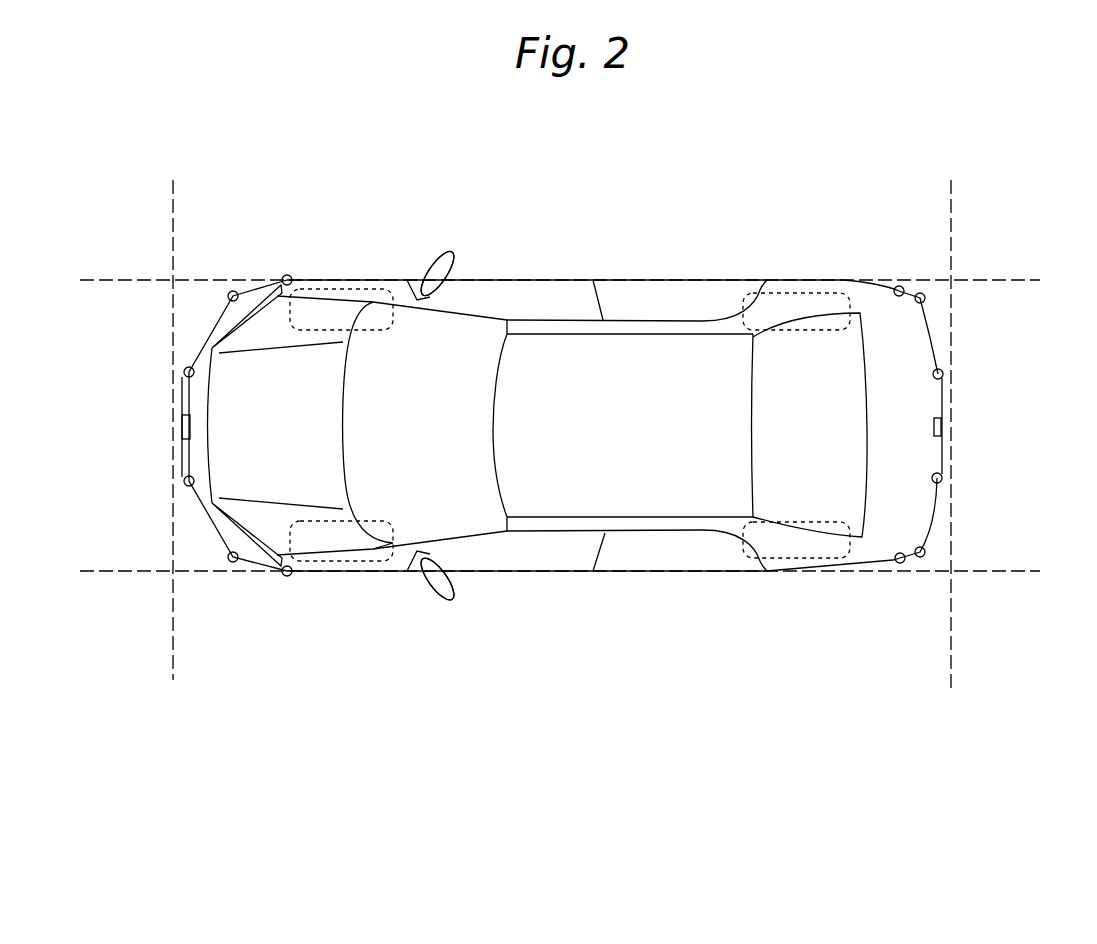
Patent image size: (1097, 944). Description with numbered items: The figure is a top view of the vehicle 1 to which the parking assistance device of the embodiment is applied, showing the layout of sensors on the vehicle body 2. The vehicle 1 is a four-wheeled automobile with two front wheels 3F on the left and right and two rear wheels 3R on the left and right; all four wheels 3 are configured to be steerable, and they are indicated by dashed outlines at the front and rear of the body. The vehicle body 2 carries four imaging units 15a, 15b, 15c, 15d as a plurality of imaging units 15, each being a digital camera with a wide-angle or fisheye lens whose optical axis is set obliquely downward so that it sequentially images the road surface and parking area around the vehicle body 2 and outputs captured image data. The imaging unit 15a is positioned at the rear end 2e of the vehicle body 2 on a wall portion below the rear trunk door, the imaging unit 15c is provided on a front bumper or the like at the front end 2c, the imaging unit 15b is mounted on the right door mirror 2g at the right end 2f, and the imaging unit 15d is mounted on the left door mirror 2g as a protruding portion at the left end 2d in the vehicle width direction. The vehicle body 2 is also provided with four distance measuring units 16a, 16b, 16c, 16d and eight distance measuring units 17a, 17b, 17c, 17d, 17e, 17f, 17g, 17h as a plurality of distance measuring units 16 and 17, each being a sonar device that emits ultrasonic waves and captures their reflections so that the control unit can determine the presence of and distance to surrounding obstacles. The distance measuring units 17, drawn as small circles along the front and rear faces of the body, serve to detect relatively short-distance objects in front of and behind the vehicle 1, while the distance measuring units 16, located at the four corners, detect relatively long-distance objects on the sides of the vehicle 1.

The vehicle 1 is at (694, 183).
The vehicle body 2 is at (878, 279).
The front end 2c is at (181, 444).
The left end 2d is at (677, 572).
The rear end 2e is at (943, 452).
The right end 2f is at (688, 279).
The door mirror 2g is at (455, 257).
The wheels 3 is at (570, 427).
The front wheels 3F is at (333, 289).
The rear wheels 3R is at (790, 292).
The imaging units 15 is at (572, 447).
The imaging unit 15a is at (943, 424).
The imaging unit 15b is at (432, 285).
The imaging unit 15c is at (181, 421).
The imaging unit 15d is at (437, 583).
The distance measuring units 16 is at (574, 411).
The distance measuring unit 16a is at (900, 564).
The distance measuring unit 16b is at (903, 285).
The distance measuring unit 16c is at (284, 276).
The distance measuring unit 16d is at (285, 577).
The distance measuring units 17 is at (570, 394).
The distance measuring unit 17a is at (926, 553).
The distance measuring unit 17b is at (943, 479).
The distance measuring unit 17c is at (943, 372).
The distance measuring unit 17d is at (925, 295).
The distance measuring unit 17e is at (228, 296).
The distance measuring unit 17f is at (184, 371).
The distance measuring unit 17g is at (184, 481).
The distance measuring unit 17h is at (227, 555).